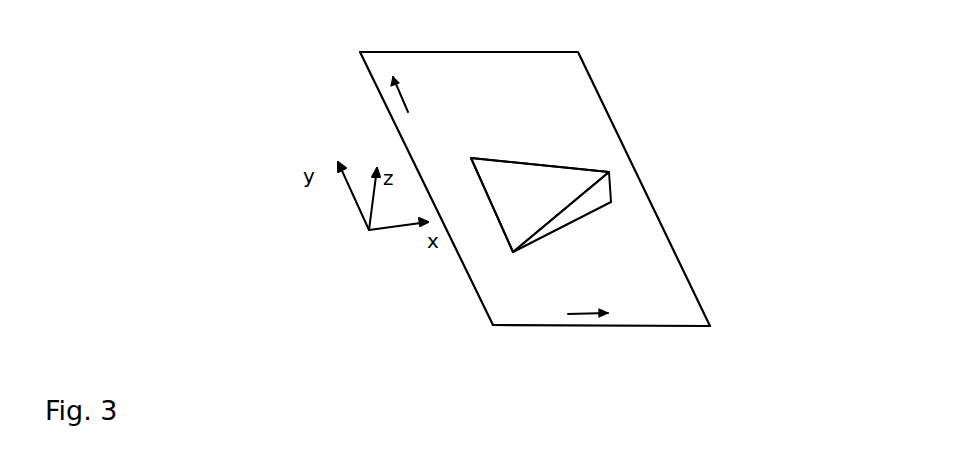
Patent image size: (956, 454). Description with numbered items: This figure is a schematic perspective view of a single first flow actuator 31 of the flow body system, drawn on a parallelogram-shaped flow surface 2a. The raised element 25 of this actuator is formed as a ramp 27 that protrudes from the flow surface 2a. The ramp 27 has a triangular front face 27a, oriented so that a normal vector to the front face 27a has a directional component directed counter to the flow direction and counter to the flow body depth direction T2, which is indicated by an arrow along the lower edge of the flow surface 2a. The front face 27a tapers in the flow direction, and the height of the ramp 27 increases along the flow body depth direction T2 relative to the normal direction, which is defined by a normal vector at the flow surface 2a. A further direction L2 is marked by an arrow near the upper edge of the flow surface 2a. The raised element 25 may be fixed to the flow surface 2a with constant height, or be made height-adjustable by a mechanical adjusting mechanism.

The flow surface 2a is at (518, 65).
The raised element 25 is at (585, 157).
The ramp 27 is at (612, 185).
The front face 27a is at (538, 188).
The first flow actuator 31 is at (605, 240).
The direction arrow L2 is at (402, 97).
The flow body depth direction T2 is at (583, 314).